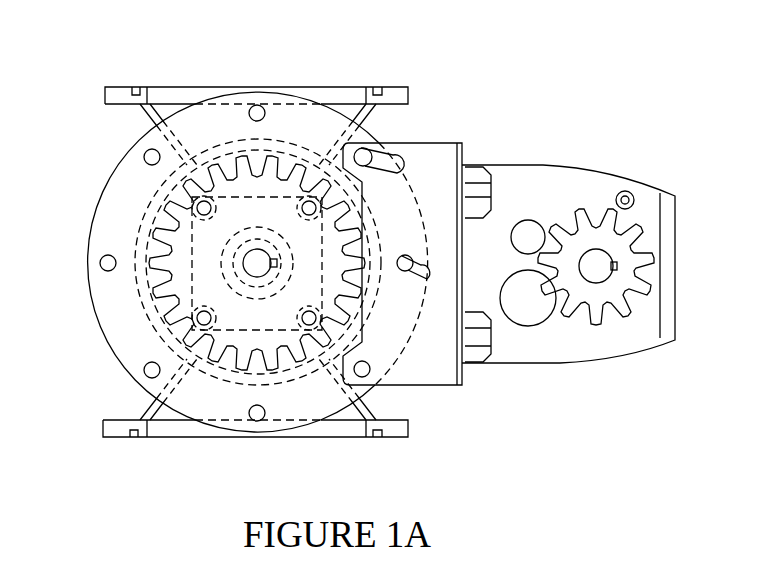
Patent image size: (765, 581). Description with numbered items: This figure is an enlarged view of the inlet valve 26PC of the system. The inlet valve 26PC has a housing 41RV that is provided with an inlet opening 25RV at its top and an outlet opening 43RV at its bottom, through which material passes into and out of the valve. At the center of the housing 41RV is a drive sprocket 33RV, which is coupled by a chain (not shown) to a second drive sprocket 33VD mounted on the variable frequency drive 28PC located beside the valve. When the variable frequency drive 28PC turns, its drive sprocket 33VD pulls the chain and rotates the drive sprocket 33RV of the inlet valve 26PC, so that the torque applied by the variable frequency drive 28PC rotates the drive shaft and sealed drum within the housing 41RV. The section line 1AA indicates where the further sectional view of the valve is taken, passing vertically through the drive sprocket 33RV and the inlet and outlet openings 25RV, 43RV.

The section line 1AA is at (250, 473).
The inlet opening 25RV is at (327, 82).
The inlet valve 26PC is at (408, 90).
The housing 41RV is at (352, 121).
The outlet opening 43RV is at (323, 438).
The drive sprocket 33RV is at (192, 326).
The drive sprocket 33VD is at (638, 224).
The variable frequency drive 28PC is at (618, 352).